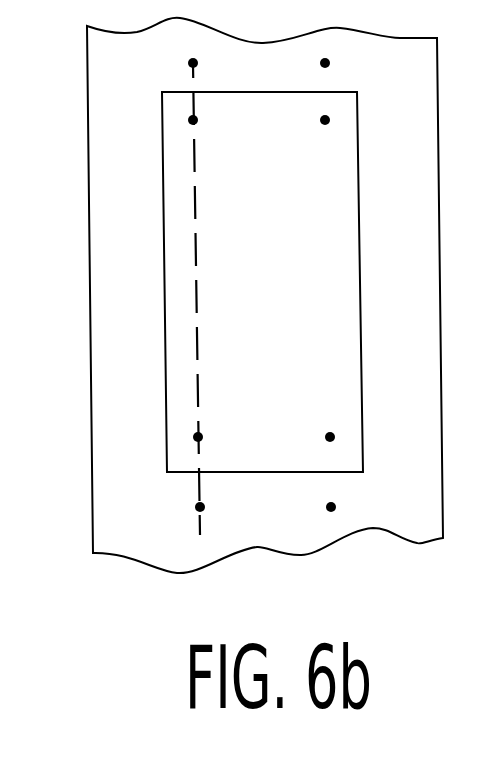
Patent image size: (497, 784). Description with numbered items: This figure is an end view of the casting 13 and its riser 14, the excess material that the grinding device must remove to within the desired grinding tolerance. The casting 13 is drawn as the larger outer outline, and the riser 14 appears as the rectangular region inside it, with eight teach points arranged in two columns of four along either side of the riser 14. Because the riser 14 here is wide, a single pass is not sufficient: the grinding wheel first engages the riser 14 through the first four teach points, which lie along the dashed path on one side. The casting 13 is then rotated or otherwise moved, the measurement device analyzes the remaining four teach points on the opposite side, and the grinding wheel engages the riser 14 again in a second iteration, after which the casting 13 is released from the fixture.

The casting 13 is at (107, 318).
The riser 14 is at (276, 305).